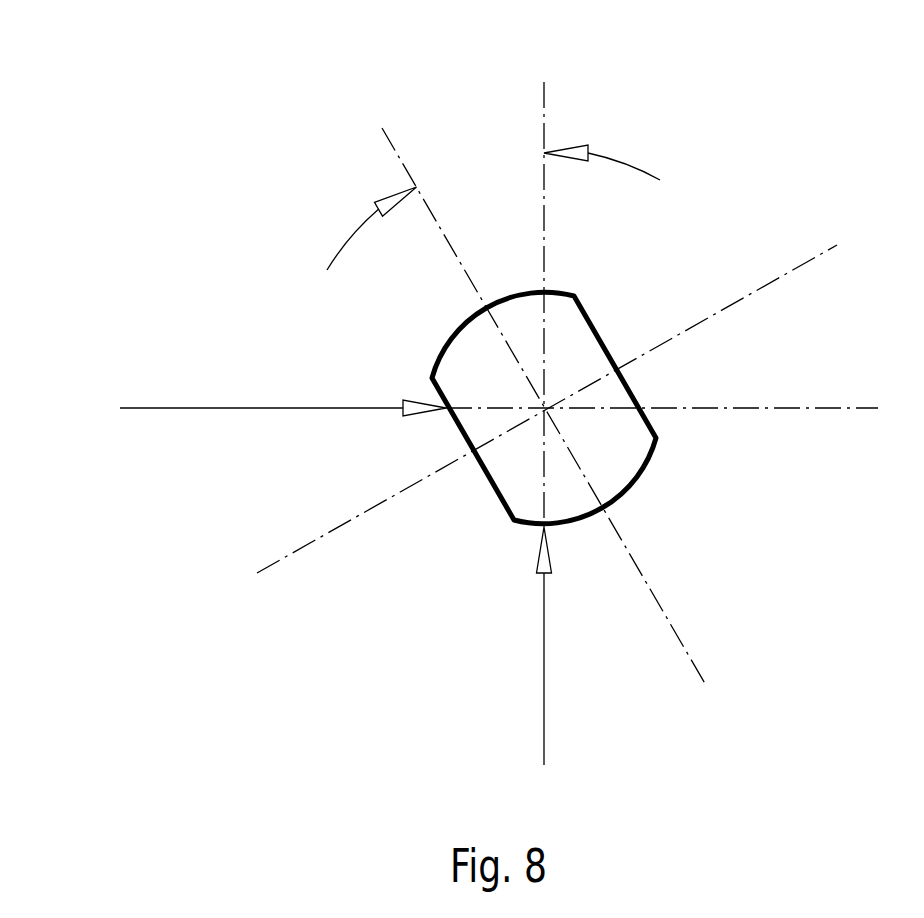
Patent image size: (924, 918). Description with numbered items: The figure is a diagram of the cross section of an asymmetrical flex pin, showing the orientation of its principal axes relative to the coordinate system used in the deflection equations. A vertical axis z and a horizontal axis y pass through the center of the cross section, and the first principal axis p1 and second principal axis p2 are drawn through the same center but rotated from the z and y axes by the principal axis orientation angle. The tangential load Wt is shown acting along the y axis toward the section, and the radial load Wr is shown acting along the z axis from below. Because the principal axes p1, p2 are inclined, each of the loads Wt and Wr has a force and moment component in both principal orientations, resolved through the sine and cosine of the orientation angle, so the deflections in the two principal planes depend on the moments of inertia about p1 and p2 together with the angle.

The z axis z is at (543, 264).
The y axis y is at (683, 411).
The first principal axis p1 is at (531, 375).
The second principal axis p2 is at (572, 390).
The tangential load Wt is at (254, 410).
The radial load Wr is at (580, 661).